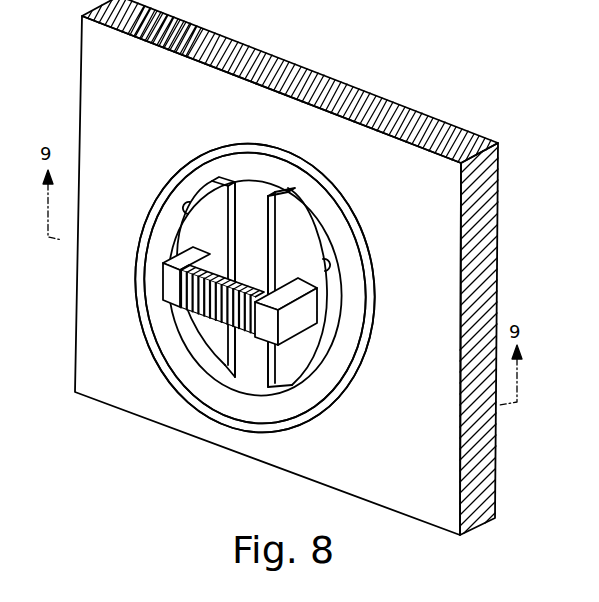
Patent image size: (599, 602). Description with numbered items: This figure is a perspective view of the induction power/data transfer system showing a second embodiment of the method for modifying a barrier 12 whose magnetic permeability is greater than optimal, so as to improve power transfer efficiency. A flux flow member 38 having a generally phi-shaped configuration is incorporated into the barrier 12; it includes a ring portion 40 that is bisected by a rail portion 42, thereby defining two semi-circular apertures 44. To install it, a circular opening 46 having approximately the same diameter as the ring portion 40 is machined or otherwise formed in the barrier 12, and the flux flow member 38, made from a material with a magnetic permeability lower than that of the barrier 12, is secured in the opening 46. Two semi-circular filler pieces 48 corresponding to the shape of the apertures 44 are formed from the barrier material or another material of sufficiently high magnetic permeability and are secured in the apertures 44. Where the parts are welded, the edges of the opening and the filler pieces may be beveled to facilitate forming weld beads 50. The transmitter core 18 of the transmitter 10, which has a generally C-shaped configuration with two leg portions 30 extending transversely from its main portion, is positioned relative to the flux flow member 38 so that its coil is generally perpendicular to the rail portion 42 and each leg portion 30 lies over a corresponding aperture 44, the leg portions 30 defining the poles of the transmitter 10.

The transmitter 10 is at (256, 268).
The barrier 12 is at (126, 61).
The transmitter core 18 is at (256, 350).
The leg portions 30 is at (264, 253).
The flux flow member 38 is at (195, 146).
The ring portion 40 is at (330, 234).
The rail portion 42 is at (258, 185).
The semi-circular apertures 44 is at (186, 211).
The circular opening 46 is at (367, 347).
The semi-circular filler pieces 48 is at (216, 176).
The weld beads 50 is at (362, 377).